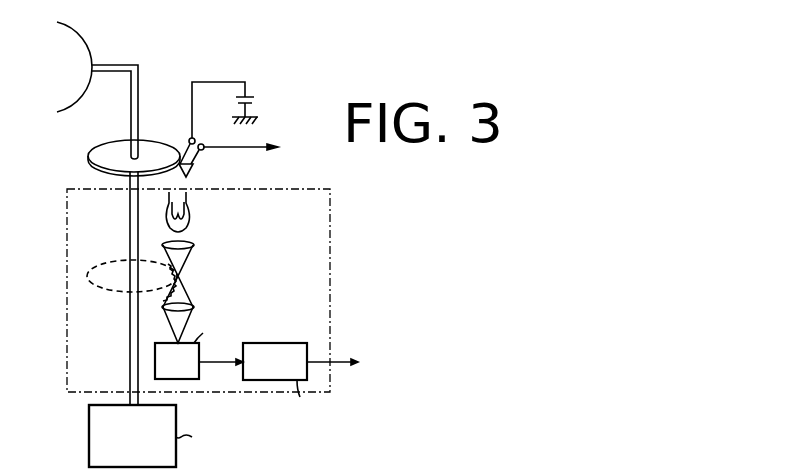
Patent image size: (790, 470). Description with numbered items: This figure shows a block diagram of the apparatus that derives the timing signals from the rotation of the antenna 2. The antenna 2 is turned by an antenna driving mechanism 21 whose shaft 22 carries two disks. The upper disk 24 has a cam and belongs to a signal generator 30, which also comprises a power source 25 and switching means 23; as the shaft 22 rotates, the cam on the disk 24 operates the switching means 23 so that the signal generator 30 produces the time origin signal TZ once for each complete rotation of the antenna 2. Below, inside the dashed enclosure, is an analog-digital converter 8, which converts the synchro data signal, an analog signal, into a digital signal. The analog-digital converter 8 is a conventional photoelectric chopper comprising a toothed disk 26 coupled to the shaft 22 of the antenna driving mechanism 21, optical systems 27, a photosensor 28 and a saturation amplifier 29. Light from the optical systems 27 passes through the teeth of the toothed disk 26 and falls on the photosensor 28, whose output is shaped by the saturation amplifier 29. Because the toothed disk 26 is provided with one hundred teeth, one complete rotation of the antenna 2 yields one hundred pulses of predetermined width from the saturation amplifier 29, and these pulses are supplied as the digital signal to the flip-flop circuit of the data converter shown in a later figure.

The antenna 2 is at (89, 56).
The shaft 22 is at (138, 78).
The signal generator 30 is at (173, 115).
The disk 24 is at (93, 165).
The power source 25 is at (248, 102).
The switching means 23 is at (194, 166).
The analog-digital converter 8 is at (325, 273).
The toothed disk 26 is at (122, 262).
The optical systems 27 is at (194, 248).
The photosensor 28 is at (216, 337).
The saturation amplifier 29 is at (420, 380).
The antenna driving mechanism 21 is at (293, 436).